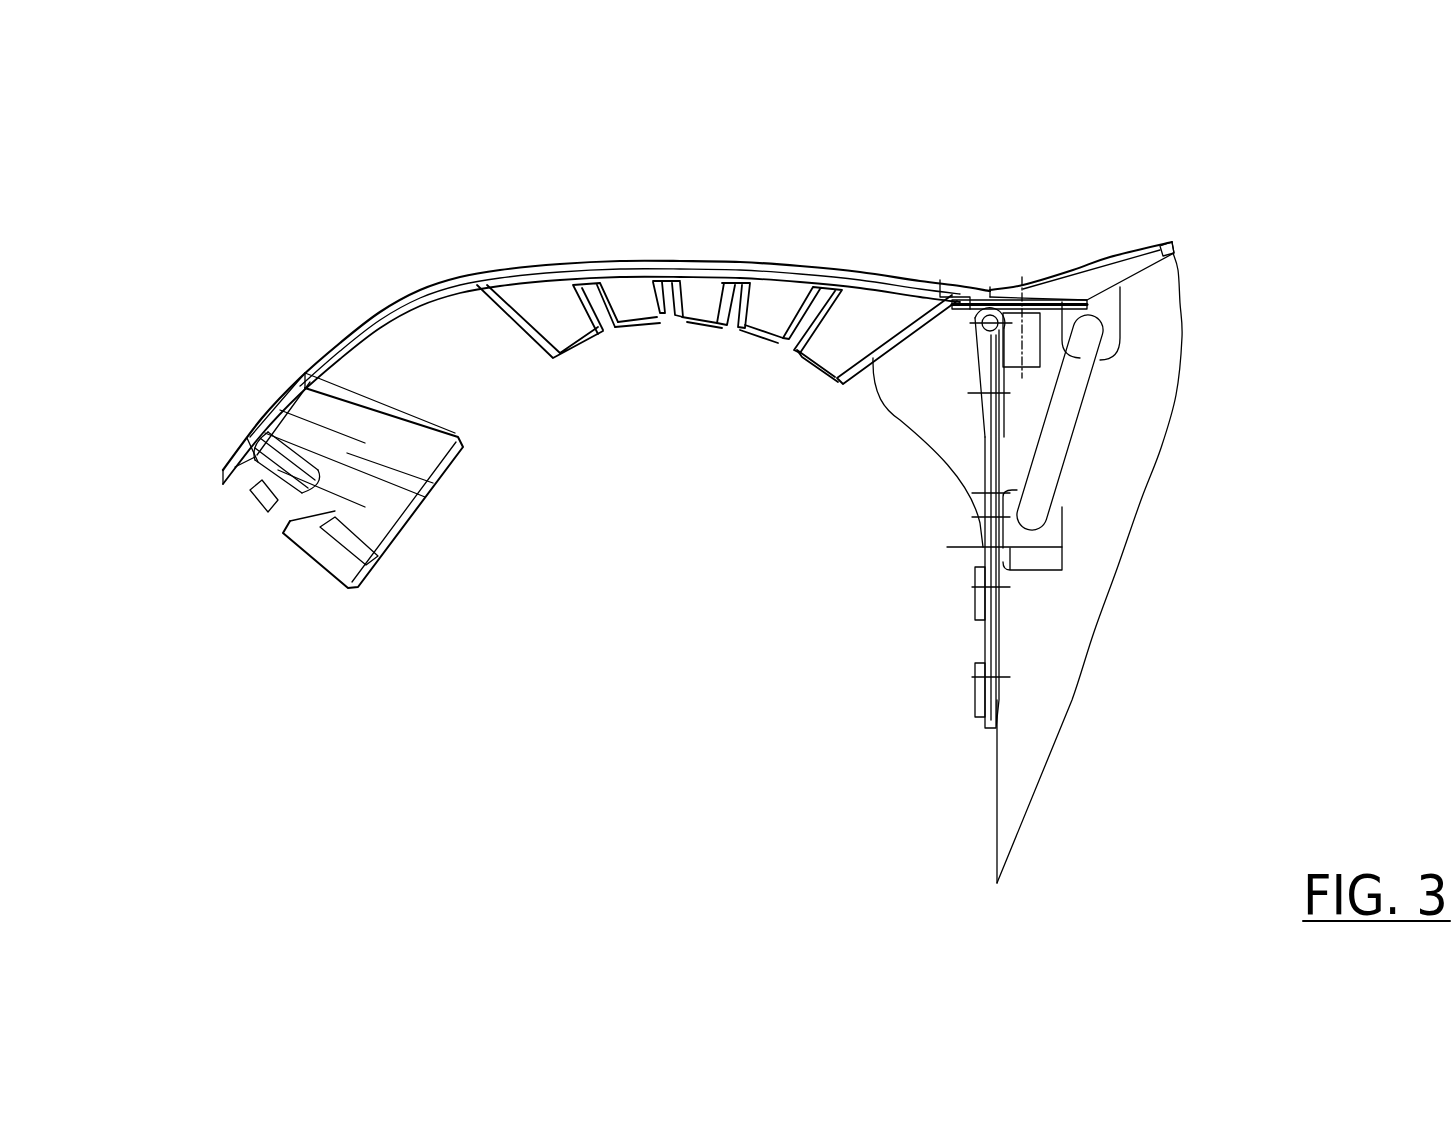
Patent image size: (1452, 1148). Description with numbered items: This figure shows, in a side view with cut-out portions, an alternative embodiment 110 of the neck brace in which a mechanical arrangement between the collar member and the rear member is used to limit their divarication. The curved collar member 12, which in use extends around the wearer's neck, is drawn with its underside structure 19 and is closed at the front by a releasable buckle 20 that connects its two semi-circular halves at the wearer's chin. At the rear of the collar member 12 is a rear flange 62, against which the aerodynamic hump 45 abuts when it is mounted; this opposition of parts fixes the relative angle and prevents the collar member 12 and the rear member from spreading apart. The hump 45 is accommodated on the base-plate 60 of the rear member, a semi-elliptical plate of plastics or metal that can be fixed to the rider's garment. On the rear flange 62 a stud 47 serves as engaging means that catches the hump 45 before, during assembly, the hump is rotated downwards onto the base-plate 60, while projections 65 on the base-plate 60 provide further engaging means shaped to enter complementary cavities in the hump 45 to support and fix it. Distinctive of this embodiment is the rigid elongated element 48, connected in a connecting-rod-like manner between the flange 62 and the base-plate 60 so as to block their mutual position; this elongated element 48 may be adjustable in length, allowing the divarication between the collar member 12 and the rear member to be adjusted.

The alternative embodiment 110 is at (978, 159).
The collar member 12 is at (533, 237).
The rib structure 19 is at (763, 258).
The rear flange 62 is at (1123, 260).
The aerodynamic hump 45 is at (1182, 327).
The rigid elongated element 48 is at (1060, 408).
The stud 47 is at (1028, 345).
The base-plate 60 is at (988, 630).
The projections 65 is at (1053, 650).
The releasable buckle 20 is at (278, 512).